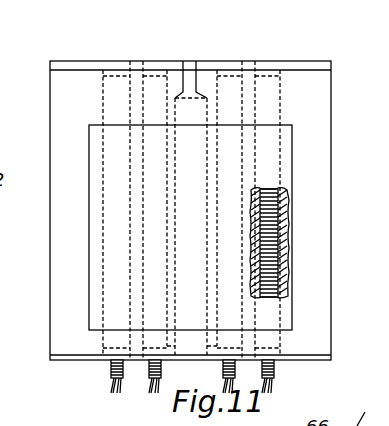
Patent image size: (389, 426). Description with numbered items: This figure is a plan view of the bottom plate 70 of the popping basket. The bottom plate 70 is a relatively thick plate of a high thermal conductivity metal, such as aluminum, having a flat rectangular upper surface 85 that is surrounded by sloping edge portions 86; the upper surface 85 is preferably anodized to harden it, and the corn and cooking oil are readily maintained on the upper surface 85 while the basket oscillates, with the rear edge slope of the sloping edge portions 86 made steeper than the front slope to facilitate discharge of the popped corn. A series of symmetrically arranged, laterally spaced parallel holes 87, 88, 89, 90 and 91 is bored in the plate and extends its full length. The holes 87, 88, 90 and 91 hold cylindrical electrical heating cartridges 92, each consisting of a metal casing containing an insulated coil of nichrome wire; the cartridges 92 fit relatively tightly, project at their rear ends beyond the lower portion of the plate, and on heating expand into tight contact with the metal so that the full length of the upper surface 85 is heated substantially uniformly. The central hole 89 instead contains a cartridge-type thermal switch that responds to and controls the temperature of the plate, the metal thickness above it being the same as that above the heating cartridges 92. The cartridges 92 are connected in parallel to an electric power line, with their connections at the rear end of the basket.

The bottom plate 70 is at (52, 238).
The upper surface 85 is at (99, 273).
The sloping edge portions 86 is at (68, 313).
The hole 87 is at (100, 95).
The hole 88 is at (140, 90).
The central hole 89 is at (175, 105).
The hole 90 is at (215, 90).
The hole 91 is at (281, 90).
The electrical heating cartridge 92 is at (288, 222).